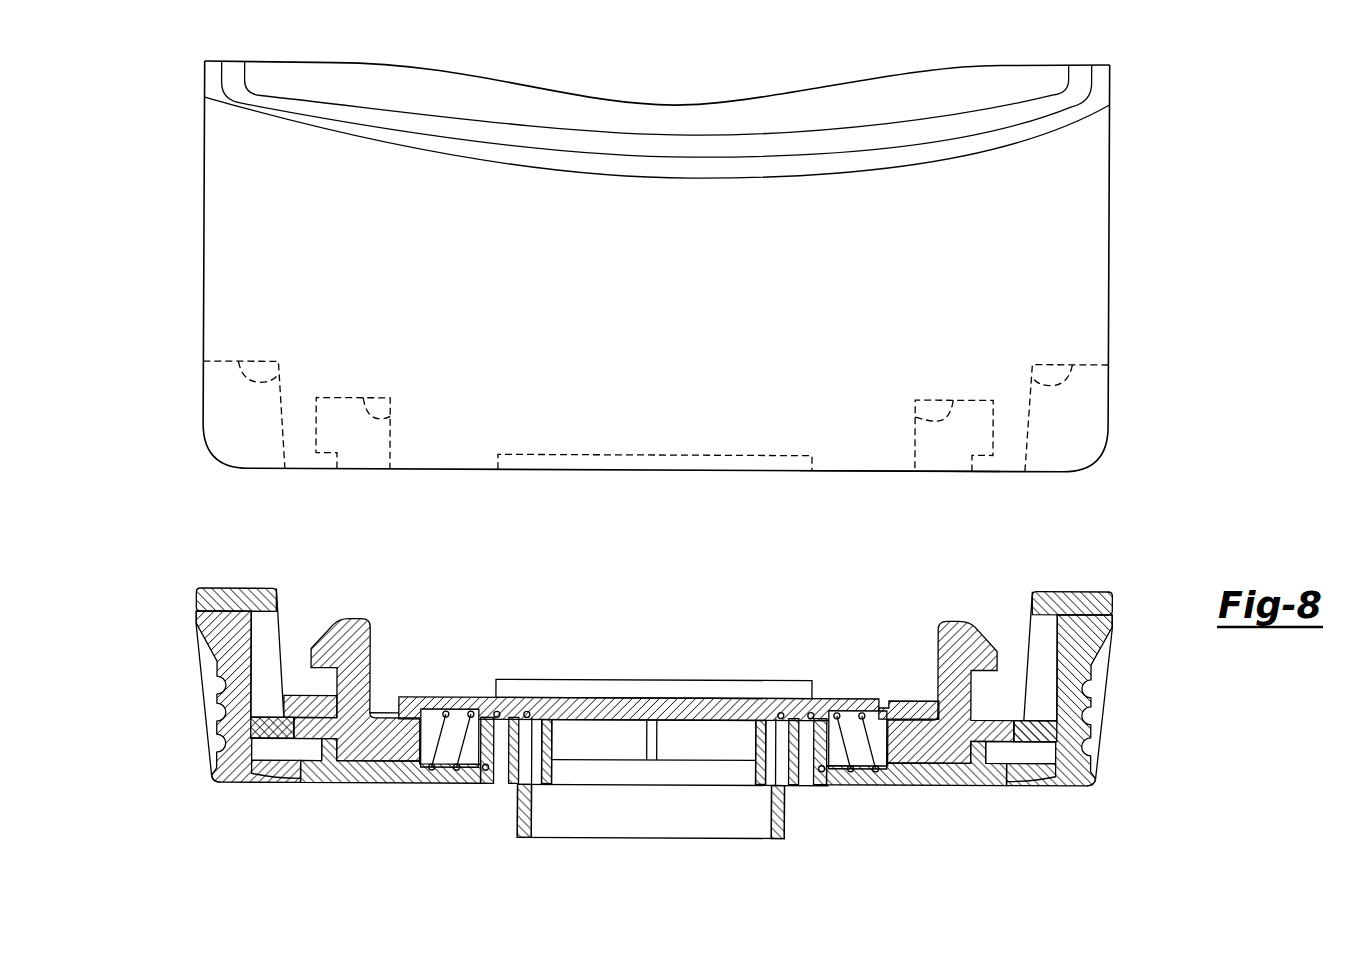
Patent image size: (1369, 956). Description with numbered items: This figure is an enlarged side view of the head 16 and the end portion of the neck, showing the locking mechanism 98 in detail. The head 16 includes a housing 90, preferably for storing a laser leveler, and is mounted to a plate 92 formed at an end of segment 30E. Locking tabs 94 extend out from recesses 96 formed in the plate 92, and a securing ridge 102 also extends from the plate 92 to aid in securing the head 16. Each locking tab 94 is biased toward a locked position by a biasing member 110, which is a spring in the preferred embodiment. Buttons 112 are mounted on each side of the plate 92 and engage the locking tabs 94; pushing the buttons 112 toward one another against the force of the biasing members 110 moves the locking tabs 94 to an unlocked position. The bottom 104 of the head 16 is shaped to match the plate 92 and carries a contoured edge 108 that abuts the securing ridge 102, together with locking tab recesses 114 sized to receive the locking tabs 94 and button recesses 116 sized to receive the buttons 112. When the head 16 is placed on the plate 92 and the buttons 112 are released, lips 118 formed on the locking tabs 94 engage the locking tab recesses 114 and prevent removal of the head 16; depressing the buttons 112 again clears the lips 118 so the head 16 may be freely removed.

The head 16 is at (1113, 140).
The housing 90 is at (1088, 178).
The locking mechanism 98 is at (1147, 402).
The bottom 104 is at (872, 470).
The contoured edge 108 is at (712, 456).
The locking tab recesses 114 is at (392, 416).
The button recesses 116 is at (278, 376).
The buttons 112 is at (199, 638).
The lips 118 is at (313, 677).
The locking tabs 94 is at (358, 640).
The recesses 96 is at (417, 707).
The securing ridge 102 is at (690, 688).
The biasing member 110 is at (455, 745).
The plate 92 is at (993, 786).
The segment 30E is at (787, 818).